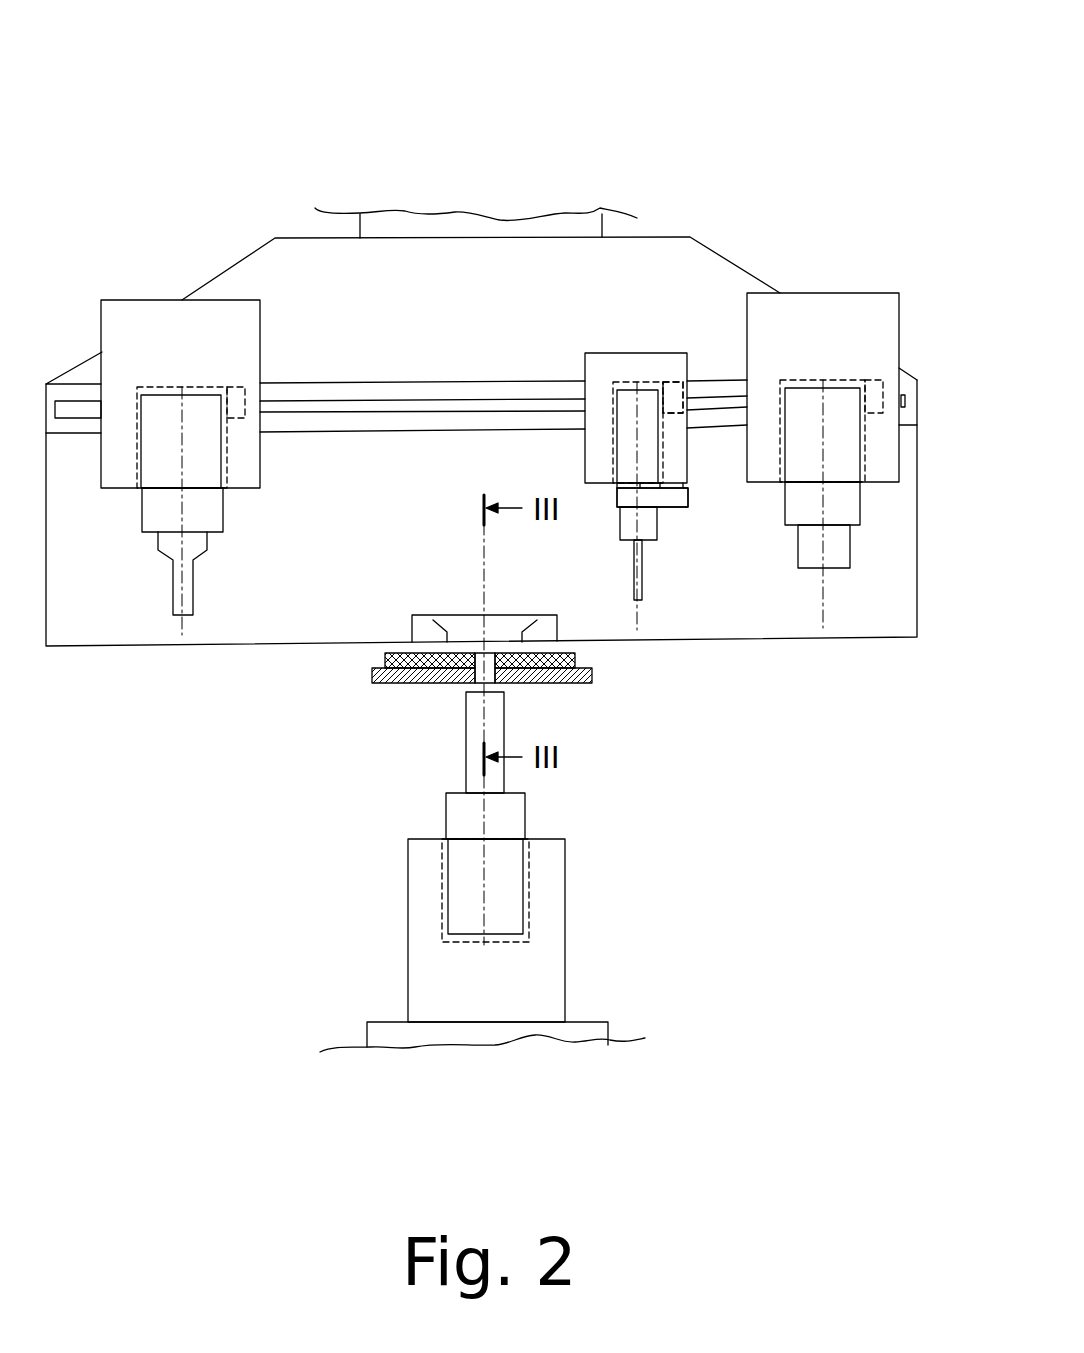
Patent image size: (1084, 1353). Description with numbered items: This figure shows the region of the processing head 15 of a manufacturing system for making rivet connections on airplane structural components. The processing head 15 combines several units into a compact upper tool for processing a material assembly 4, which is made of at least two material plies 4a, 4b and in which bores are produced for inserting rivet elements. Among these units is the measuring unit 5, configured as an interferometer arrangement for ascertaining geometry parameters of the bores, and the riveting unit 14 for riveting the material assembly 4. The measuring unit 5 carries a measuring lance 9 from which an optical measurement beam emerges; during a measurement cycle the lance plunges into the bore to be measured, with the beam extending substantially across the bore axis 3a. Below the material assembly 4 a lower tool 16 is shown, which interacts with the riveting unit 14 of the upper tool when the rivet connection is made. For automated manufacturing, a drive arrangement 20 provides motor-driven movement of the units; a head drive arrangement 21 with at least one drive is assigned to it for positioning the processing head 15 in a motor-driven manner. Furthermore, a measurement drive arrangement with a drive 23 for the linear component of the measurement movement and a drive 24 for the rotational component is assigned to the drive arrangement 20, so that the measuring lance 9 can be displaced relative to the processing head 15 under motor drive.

The processing head 15 is at (838, 85).
The measuring unit 5 is at (672, 352).
The drive arrangement 20 is at (695, 390).
The head drive arrangement 21 is at (685, 493).
The drive for linear component of measurement movement 23 is at (677, 392).
The drive for rotational component of measurement movement 24 is at (678, 508).
The measuring lance 9 is at (642, 572).
The riveting unit 14 is at (850, 307).
The material assembly 4 is at (481, 728).
The material ply 4a is at (383, 658).
The material ply 4b is at (372, 678).
The lower tool 16 is at (503, 922).
The bore axis 3a is at (485, 910).